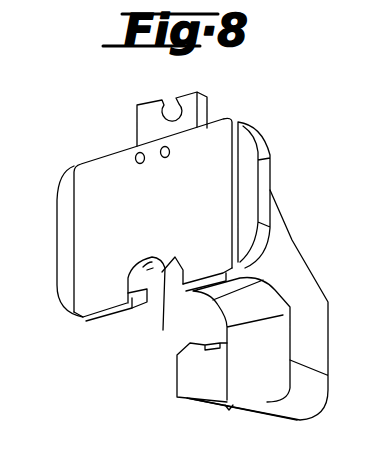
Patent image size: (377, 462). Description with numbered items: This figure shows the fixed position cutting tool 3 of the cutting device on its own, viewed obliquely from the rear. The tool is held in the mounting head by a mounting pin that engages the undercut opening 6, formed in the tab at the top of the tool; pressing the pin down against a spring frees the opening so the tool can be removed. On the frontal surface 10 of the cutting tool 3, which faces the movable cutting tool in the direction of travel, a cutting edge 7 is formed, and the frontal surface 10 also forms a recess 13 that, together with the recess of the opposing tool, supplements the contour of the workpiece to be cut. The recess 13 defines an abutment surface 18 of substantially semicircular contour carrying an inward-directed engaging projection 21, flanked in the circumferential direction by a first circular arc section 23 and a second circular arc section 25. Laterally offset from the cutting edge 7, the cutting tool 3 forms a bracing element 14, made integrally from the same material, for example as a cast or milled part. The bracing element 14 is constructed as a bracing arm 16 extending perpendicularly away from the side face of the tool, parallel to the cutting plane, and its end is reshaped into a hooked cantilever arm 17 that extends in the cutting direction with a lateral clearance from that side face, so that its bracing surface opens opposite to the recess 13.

The fixed position cutting tool 3 is at (107, 206).
The undercut opening 6 is at (163, 115).
The cutting edge 7 is at (131, 273).
The frontal surface 10 is at (112, 313).
The recess 13 is at (139, 336).
The bracing element 14 is at (292, 244).
The bracing arm 16 is at (285, 235).
The hooked cantilever arm 17 is at (192, 373).
The abutment surface 18 is at (150, 258).
The engaging projection 21 is at (156, 342).
The first circular arc section 23 is at (177, 263).
The second circular arc section 25 is at (131, 283).